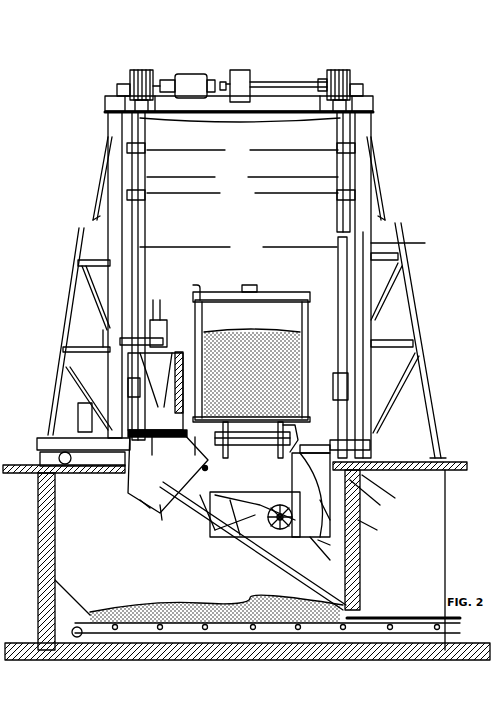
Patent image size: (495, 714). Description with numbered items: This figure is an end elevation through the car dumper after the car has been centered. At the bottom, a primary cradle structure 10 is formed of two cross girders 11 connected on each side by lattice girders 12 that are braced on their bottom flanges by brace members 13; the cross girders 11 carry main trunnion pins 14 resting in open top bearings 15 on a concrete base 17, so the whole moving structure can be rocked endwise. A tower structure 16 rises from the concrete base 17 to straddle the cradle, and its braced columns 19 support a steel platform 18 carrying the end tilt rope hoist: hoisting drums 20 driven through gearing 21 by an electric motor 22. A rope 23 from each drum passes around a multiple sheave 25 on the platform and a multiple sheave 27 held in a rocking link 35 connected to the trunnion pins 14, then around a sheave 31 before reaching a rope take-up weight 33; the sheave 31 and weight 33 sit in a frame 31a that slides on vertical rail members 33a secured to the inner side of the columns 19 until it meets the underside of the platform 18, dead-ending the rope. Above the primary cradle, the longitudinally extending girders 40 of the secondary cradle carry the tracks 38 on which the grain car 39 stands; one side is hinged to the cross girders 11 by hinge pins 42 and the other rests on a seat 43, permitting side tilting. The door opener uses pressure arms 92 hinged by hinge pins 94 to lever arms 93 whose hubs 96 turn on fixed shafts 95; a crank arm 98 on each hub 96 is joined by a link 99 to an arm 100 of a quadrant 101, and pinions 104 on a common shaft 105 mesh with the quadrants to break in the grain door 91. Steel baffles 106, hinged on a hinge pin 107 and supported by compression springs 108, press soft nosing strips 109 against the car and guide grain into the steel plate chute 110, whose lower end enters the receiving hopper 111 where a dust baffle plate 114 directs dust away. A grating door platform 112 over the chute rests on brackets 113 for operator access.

The primary cradle structure 10 is at (373, 530).
The cross girders 11 is at (332, 513).
The lattice girders 12 is at (328, 547).
The brace members 13 is at (324, 555).
The main trunnion pins 14 is at (350, 453).
The open top bearings 15 is at (384, 492).
The tower structure 16 is at (375, 282).
The concrete base 17 is at (370, 498).
The steel platform 18 is at (373, 103).
The braced columns 19 is at (405, 243).
The hoisting drums 20 is at (130, 80).
The gearing 21 is at (250, 74).
The electric motor 22 is at (200, 76).
The rope 23 is at (238, 247).
The multiple sheave 25 is at (241, 276).
The multiple sheave 27 is at (128, 388).
The sheave 31 is at (242, 151).
The frames 31a is at (242, 177).
The rope take-up weight 33 is at (242, 194).
The vertical rail members 33a is at (97, 212).
The rocking link 35 is at (348, 418).
The tracks 38 is at (296, 442).
The grain car 39 is at (275, 293).
The longitudinally extending girders 40 is at (252, 442).
The hinge pins 42 is at (204, 467).
The seat 43 is at (300, 490).
The grain door 91 is at (214, 352).
The pressure arms 92 is at (160, 355).
The lever arm 93 is at (175, 355).
The hinge pin 94 is at (157, 395).
The fixed shaft 95 is at (160, 320).
The hub 96 is at (153, 320).
The crank arm 98 is at (122, 322).
The link 99 is at (190, 523).
The arm 100 is at (212, 525).
The quadrant 101 is at (240, 535).
The pinions 104 is at (265, 530).
The common shaft 105 is at (284, 530).
The steel baffles 106 is at (98, 400).
The hinge pin 107 is at (198, 452).
The compression springs 108 is at (128, 492).
The soft nosing strips 109 is at (195, 320).
The steel plate chute 110 is at (160, 515).
The receiving hopper 111 is at (92, 578).
The door platform 112 is at (142, 500).
The brackets 113 is at (155, 440).
The dust baffle plate 114 is at (300, 580).